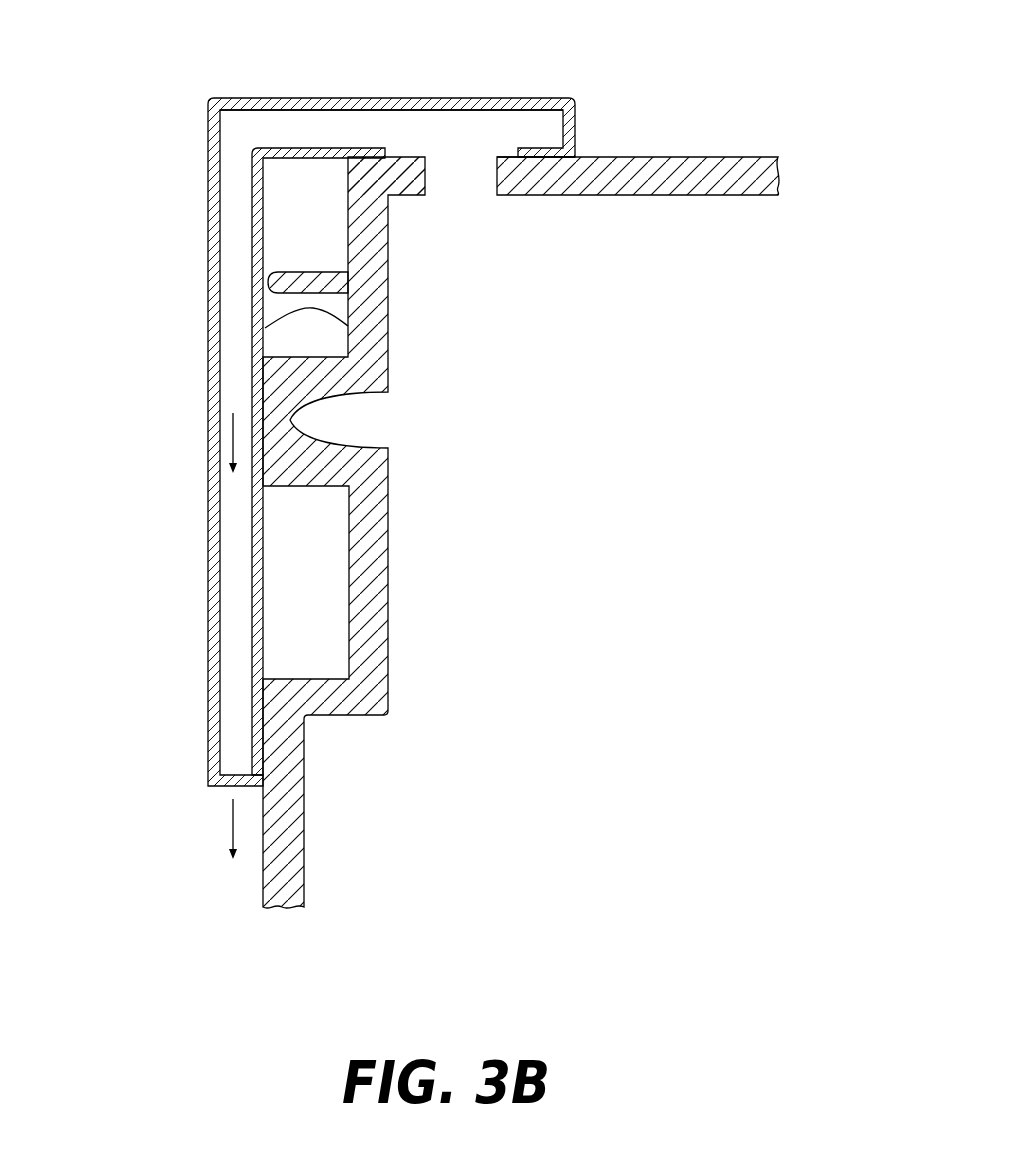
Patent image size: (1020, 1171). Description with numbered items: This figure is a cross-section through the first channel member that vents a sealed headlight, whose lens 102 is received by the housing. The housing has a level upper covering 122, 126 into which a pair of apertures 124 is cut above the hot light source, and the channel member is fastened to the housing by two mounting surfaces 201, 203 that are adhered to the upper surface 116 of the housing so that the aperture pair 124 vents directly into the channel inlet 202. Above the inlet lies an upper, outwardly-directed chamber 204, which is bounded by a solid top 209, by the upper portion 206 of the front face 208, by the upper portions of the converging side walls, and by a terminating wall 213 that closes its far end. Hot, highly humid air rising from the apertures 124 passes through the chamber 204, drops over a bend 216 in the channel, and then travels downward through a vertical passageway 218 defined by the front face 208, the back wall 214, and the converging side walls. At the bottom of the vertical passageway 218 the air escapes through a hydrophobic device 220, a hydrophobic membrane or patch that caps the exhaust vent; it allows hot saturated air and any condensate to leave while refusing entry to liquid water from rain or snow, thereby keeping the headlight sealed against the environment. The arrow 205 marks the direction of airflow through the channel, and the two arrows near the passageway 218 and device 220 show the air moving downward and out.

The lens 102 is at (434, 469).
The upper surface 116 is at (707, 168).
The level upper covering 122 is at (627, 185).
The pair of apertures 124 is at (437, 203).
The level upper covering 126 is at (553, 425).
The mounting surface 201 is at (545, 158).
The channel inlet 202 is at (434, 135).
The mounting surface 203 is at (372, 158).
The upper, outwardly-directed chamber 204 is at (398, 122).
The airflow path 205 is at (318, 174).
The upper portion of front face 206 is at (208, 132).
The front face 208 is at (208, 502).
The solid top 209 is at (287, 98).
The terminating wall 213 is at (577, 130).
The back wall 214 is at (348, 326).
The bend 216 is at (233, 178).
The vertical passageway 218 is at (233, 333).
The hydrophobic device 220 is at (219, 798).